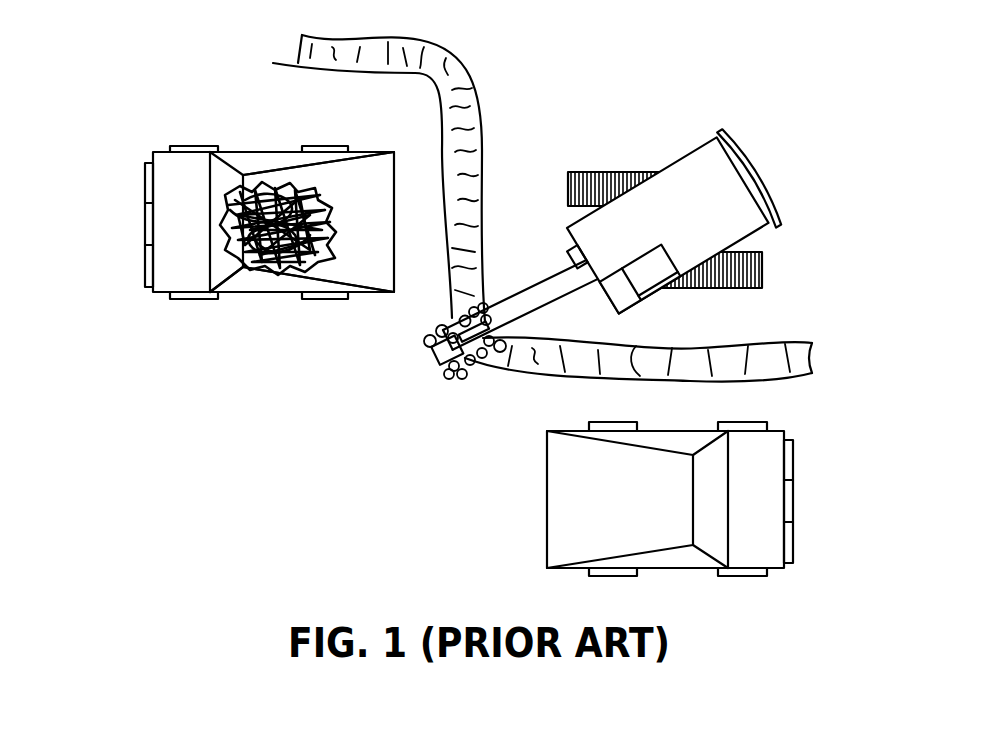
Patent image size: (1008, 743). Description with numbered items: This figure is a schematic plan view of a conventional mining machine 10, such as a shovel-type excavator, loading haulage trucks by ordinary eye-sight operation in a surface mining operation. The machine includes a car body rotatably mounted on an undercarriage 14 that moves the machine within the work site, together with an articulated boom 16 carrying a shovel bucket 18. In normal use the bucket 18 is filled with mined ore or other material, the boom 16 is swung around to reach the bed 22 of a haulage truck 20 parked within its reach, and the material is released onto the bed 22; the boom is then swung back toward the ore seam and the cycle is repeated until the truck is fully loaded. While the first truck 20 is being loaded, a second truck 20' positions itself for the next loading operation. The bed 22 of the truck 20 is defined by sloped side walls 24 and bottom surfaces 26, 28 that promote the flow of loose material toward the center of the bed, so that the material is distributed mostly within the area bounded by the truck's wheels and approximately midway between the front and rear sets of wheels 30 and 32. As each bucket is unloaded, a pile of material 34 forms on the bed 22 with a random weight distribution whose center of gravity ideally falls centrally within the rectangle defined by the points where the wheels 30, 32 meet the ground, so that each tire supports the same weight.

The mining machine 10 is at (720, 218).
The undercarriage 14 is at (596, 172).
The articulated boom 16 is at (553, 277).
The shovel bucket 18 is at (460, 380).
The haulage truck 20 is at (222, 221).
The second truck 20' is at (727, 499).
The bed 22 is at (370, 183).
The sloped side walls 24 is at (270, 164).
The bottom surface 26 is at (222, 263).
The bottom surface 28 is at (372, 227).
The front wheels 30 is at (207, 145).
The rear wheels 32 is at (320, 145).
The pile of material 34 is at (290, 219).